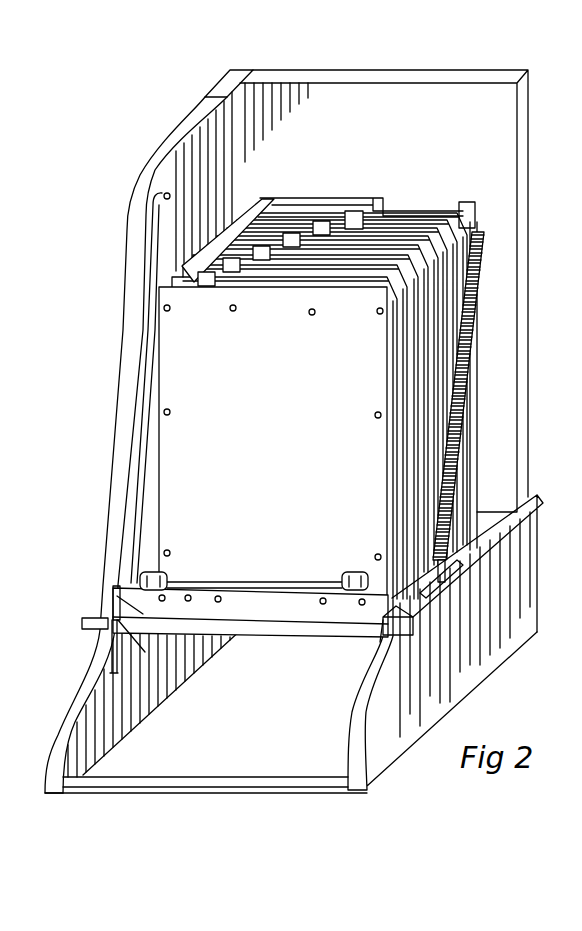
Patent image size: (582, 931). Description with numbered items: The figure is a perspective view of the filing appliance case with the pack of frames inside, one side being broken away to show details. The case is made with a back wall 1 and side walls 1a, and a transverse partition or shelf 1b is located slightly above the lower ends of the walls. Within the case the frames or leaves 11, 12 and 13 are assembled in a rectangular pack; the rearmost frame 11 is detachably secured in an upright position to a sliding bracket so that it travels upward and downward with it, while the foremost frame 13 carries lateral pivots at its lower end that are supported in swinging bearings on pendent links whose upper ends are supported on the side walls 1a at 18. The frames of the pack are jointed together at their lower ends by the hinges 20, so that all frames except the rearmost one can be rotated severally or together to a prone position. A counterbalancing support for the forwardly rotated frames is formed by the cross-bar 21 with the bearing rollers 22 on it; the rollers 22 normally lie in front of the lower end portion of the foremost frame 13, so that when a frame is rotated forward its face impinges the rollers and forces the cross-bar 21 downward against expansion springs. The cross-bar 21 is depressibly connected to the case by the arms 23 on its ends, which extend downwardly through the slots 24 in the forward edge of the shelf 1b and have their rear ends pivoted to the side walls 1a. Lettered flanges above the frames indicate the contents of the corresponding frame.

The back wall 1 is at (352, 310).
The side walls 1a is at (126, 270).
The transverse partition or shelf 1b is at (82, 624).
The rearmost frame 11 is at (462, 218).
The frame or leaf 12 is at (410, 233).
The foremost frame 13 is at (273, 442).
The link support on side walls 18 is at (170, 197).
The hinges 20 is at (478, 292).
The cross-bar 21 is at (268, 596).
The bearing rollers 22 is at (163, 578).
The arms 23 is at (110, 597).
The slots 24 is at (130, 645).